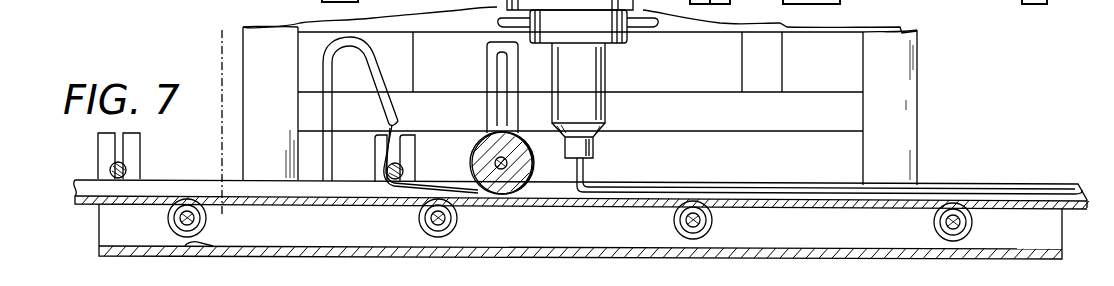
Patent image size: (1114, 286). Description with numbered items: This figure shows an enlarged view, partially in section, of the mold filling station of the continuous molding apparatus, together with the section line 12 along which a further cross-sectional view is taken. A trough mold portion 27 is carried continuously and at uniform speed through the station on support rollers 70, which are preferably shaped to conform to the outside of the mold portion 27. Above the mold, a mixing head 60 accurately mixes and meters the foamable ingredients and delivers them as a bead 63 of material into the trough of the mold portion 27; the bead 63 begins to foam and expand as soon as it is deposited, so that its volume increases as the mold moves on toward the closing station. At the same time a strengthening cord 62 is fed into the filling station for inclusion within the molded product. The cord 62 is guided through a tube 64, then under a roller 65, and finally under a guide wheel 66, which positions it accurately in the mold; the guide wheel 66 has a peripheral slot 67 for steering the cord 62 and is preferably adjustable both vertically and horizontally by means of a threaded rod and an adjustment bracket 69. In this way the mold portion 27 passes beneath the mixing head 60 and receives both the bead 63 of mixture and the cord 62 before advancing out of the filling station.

The section line 12- 12 is at (236, 30).
The trough mold portion 27 is at (163, 186).
The mixing head 60 is at (592, 36).
The cord 62 is at (383, 158).
The bead 63 is at (615, 194).
The tube 64 is at (325, 115).
The roller 65 is at (404, 172).
The guide wheel 66 is at (482, 145).
The peripheral slot 67 is at (538, 146).
The adjustment bracket 69 is at (487, 67).
The support rollers 70 is at (168, 218).